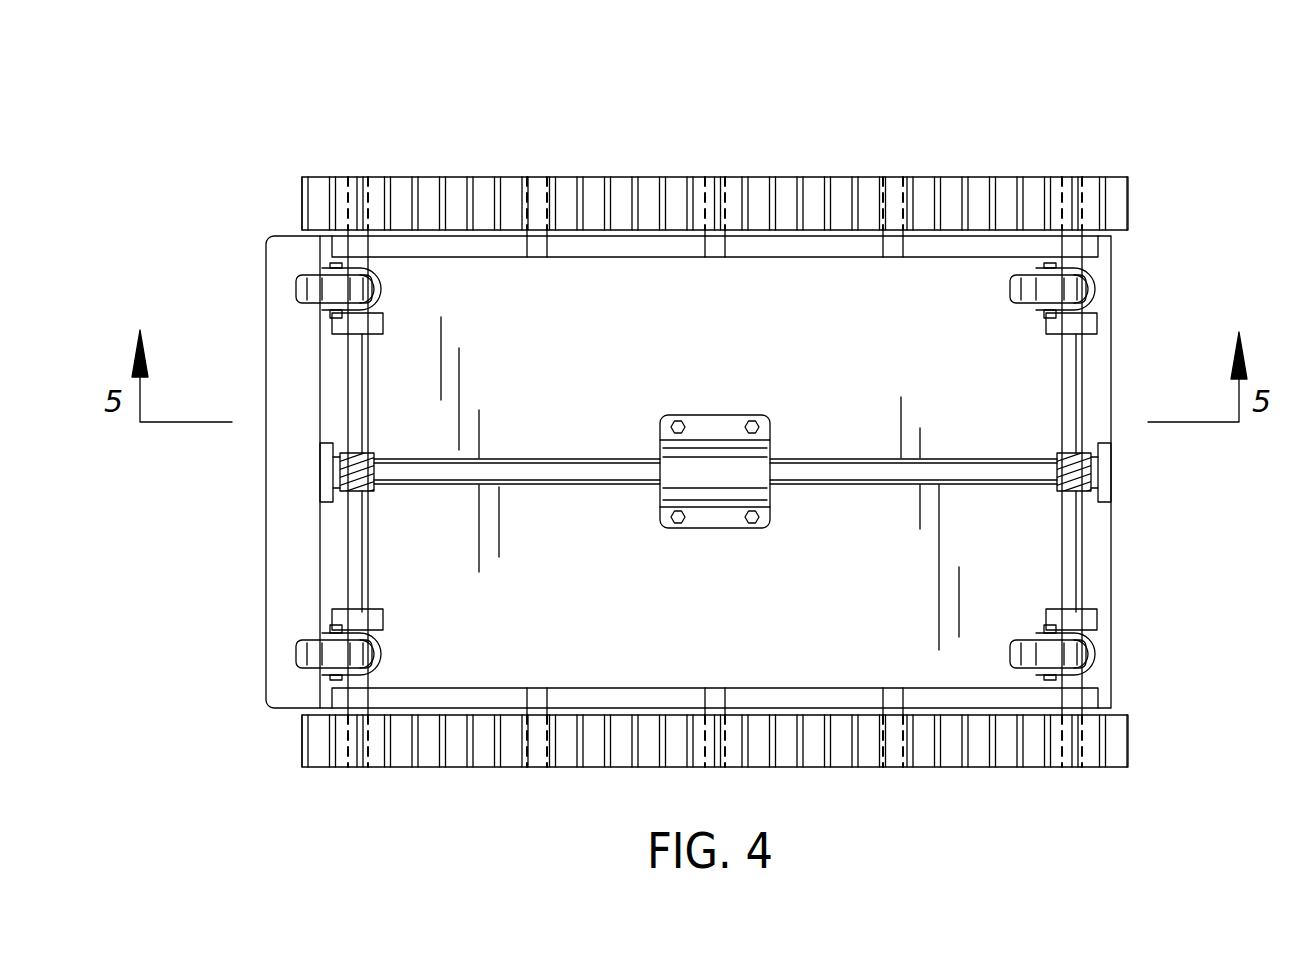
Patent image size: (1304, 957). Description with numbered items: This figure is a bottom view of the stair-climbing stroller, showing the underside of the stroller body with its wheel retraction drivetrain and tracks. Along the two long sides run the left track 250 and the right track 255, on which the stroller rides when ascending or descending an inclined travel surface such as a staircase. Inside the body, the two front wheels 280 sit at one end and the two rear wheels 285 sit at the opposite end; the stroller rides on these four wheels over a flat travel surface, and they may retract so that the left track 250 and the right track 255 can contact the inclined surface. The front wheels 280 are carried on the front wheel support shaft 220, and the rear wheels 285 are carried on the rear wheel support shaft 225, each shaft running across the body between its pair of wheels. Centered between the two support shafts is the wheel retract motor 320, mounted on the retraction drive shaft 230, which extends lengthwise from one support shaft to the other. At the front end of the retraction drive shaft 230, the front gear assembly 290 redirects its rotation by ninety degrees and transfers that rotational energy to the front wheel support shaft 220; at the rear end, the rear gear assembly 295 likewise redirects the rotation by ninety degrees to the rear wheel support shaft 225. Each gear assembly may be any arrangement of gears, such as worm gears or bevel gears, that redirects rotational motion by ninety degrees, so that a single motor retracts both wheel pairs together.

The front wheel support shaft 220 is at (1082, 388).
The rear wheel support shaft 225 is at (353, 407).
The retraction drive shaft 230 is at (577, 470).
The left track 250 is at (973, 762).
The right track 255 is at (810, 202).
The front wheels 280 is at (1083, 289).
The rear wheels 285 is at (302, 289).
The front gear assembly 290 is at (1073, 483).
The rear gear assembly 295 is at (353, 487).
The wheel retract motor 320 is at (758, 479).